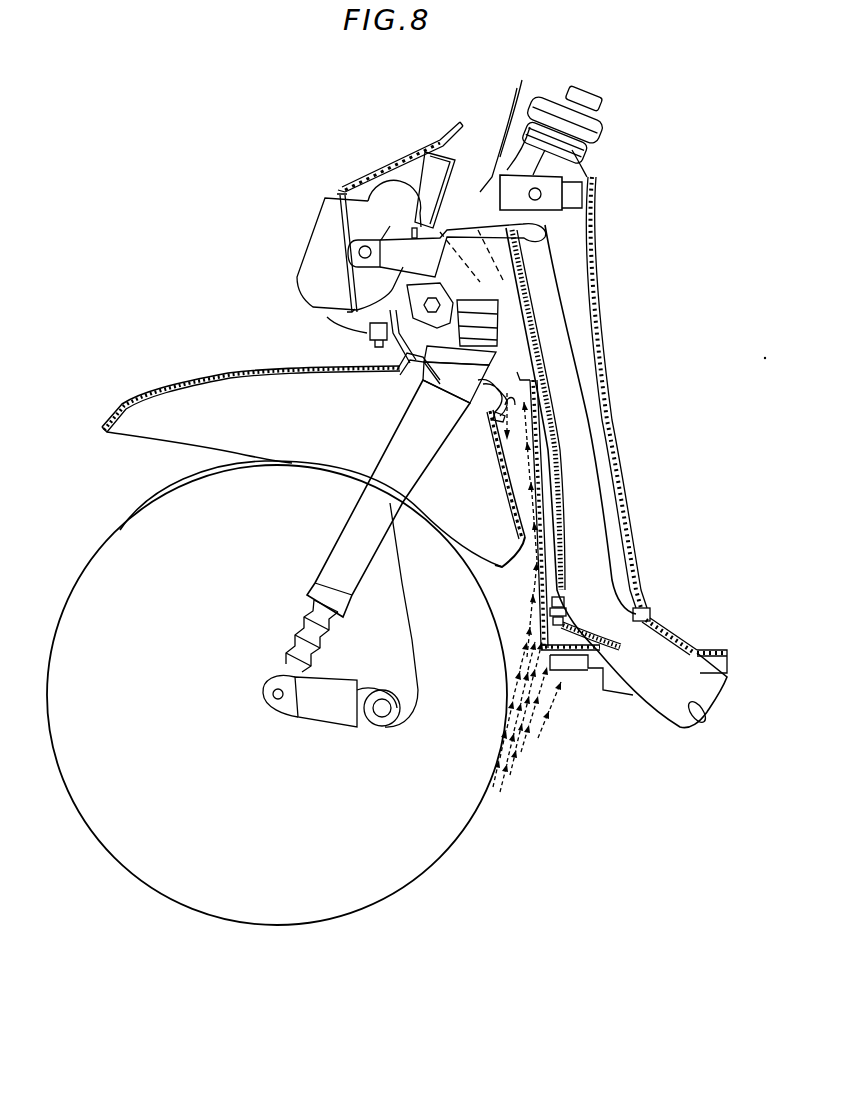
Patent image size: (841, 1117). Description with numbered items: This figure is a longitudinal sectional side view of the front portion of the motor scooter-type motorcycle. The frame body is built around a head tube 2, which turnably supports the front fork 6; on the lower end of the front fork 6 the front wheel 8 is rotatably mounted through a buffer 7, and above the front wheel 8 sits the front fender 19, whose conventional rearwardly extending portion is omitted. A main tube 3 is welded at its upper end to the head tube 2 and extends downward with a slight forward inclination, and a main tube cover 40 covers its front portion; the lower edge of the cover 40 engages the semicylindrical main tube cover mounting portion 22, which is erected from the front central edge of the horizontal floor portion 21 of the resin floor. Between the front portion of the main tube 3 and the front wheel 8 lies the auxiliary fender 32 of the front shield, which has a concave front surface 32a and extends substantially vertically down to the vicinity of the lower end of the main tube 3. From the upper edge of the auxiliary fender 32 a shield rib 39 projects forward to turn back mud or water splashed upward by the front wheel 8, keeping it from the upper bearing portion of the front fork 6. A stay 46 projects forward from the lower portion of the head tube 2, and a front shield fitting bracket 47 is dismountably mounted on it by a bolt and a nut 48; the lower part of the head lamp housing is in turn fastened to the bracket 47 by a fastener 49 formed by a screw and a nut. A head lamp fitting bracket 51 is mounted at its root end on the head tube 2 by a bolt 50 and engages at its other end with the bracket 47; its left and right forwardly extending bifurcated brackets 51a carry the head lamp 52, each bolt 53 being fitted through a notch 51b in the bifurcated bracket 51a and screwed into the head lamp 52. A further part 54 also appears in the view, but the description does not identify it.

The head tube 2 is at (522, 263).
The main tube 3 is at (587, 450).
The front fork 6 is at (330, 567).
The buffer 7 is at (290, 633).
The front wheel 8 is at (434, 846).
The front fender 19 is at (205, 375).
The horizontal floor portion 21 is at (697, 657).
The main tube cover mounting portion 22 is at (667, 633).
The auxiliary fender 32 is at (530, 597).
The concave front surface 32a is at (535, 545).
The shield rib 39 is at (508, 382).
The main tube cover 40 is at (597, 347).
The stay 46 is at (443, 292).
The front shield fitting bracket 47 is at (340, 367).
The bolt and nut 48 is at (427, 307).
The fastener 49 is at (373, 337).
The bolt 50 is at (557, 223).
The head lamp fitting bracket 51 is at (397, 287).
The bifurcated bracket 51a is at (350, 270).
The notch 51b is at (357, 240).
The head lamp 52 is at (327, 212).
The bolt 53 is at (357, 252).
The turn signal lamp 54 is at (445, 160).